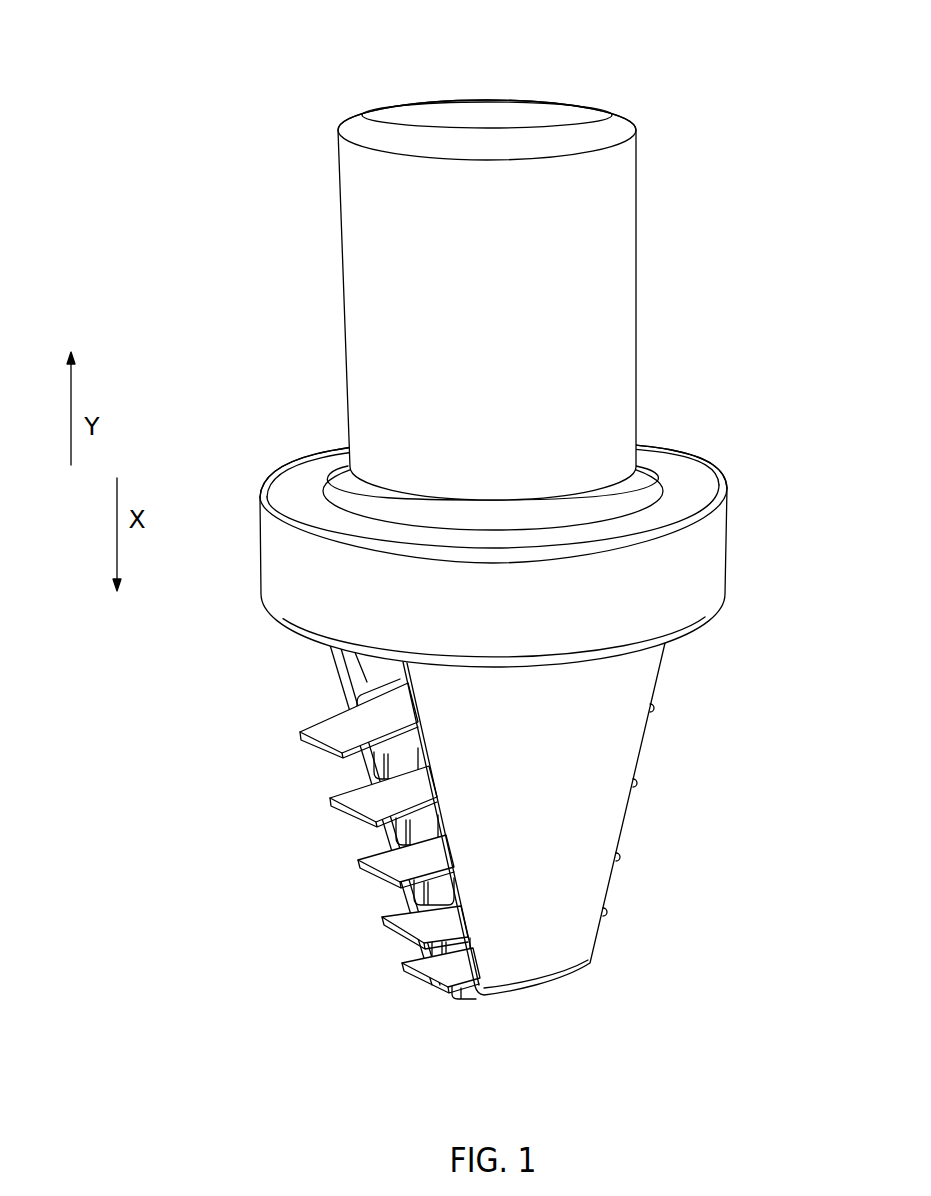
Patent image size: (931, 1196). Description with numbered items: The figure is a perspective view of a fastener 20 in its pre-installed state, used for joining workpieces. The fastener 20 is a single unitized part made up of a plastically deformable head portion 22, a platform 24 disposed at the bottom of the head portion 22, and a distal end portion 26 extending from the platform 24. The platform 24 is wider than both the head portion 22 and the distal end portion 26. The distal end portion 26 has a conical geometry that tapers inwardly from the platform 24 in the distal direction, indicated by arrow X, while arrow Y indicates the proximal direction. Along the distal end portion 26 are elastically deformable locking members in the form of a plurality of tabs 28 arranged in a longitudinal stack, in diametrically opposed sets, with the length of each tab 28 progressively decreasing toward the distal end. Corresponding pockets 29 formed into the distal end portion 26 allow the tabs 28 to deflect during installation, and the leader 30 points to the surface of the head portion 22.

The fastener 20 is at (445, 525).
The plastically deformable head portion 22 is at (504, 300).
The platform 24 is at (708, 548).
The distal end portion 26 is at (485, 840).
The tabs 28 is at (330, 737).
The pockets 29 is at (382, 677).
The shank outer surface 30 is at (415, 293).